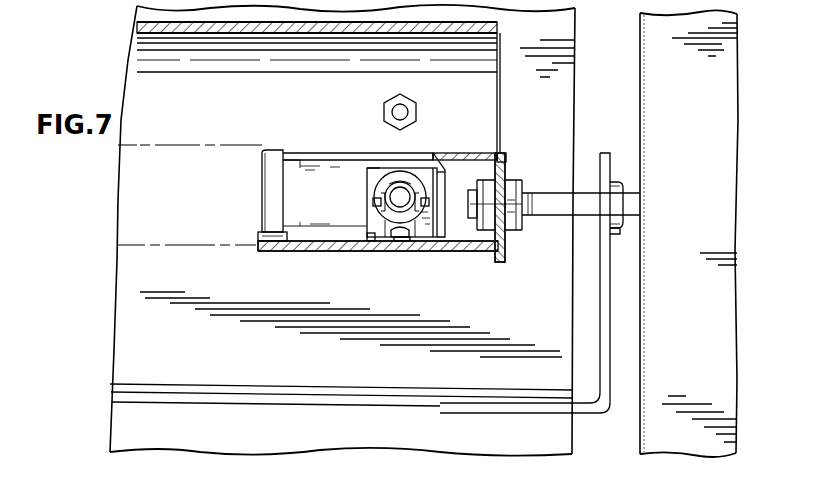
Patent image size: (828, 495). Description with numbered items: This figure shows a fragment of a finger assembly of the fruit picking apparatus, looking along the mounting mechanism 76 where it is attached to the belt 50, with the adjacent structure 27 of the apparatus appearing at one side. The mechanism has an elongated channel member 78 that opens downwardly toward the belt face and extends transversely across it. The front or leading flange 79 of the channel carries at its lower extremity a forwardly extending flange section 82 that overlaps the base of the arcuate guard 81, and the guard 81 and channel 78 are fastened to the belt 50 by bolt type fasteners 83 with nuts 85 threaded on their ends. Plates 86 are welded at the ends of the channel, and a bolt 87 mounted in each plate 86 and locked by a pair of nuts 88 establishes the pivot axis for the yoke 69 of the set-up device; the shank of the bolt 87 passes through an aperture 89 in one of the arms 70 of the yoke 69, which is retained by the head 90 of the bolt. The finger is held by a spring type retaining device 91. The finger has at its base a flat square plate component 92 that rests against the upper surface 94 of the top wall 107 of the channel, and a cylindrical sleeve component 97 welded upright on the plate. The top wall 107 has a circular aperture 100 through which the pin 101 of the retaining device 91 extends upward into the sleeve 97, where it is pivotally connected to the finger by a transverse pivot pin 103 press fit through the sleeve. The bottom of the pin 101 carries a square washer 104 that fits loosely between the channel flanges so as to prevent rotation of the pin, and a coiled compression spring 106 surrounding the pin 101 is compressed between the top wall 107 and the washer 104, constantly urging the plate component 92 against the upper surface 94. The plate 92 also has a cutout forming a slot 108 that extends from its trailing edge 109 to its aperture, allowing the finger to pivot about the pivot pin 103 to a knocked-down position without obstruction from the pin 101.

The rear panel 27 is at (648, 430).
The belt 50 is at (560, 92).
The yoke 69 is at (365, 402).
The arms 70 is at (602, 296).
The mounting mechanism 76 is at (430, 153).
The channel member 78 is at (392, 153).
The leading flange 79 is at (477, 158).
The arcuate guard 81 is at (478, 33).
The flange section 82 is at (483, 97).
The bolt type fasteners 83 is at (408, 108).
The nuts 85 is at (384, 112).
The plates 86 is at (505, 245).
The bolt 87 is at (548, 213).
The nuts 88 is at (494, 182).
The aperture 89 is at (612, 172).
The head 90 is at (620, 229).
The retaining device 91 is at (393, 197).
The plate component 92 is at (278, 172).
The upper surface 94 is at (312, 158).
The sleeve component 97 is at (380, 168).
The aperture 100 is at (428, 178).
The pin 101 is at (387, 213).
The pivot pin 103 is at (375, 204).
The square washer 104 is at (444, 155).
The compression spring 106 is at (405, 240).
The top wall 107 is at (307, 228).
The slot 108 is at (398, 241).
The trailing edge 109 is at (368, 222).